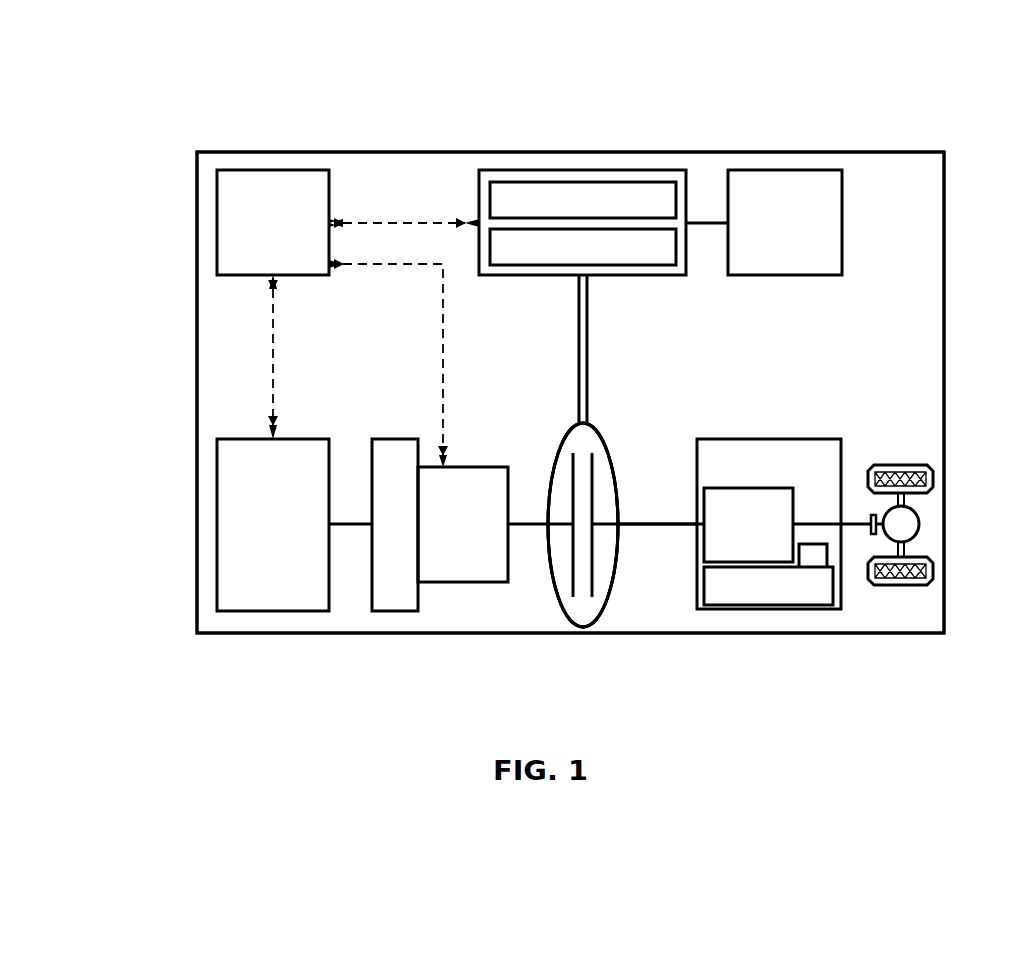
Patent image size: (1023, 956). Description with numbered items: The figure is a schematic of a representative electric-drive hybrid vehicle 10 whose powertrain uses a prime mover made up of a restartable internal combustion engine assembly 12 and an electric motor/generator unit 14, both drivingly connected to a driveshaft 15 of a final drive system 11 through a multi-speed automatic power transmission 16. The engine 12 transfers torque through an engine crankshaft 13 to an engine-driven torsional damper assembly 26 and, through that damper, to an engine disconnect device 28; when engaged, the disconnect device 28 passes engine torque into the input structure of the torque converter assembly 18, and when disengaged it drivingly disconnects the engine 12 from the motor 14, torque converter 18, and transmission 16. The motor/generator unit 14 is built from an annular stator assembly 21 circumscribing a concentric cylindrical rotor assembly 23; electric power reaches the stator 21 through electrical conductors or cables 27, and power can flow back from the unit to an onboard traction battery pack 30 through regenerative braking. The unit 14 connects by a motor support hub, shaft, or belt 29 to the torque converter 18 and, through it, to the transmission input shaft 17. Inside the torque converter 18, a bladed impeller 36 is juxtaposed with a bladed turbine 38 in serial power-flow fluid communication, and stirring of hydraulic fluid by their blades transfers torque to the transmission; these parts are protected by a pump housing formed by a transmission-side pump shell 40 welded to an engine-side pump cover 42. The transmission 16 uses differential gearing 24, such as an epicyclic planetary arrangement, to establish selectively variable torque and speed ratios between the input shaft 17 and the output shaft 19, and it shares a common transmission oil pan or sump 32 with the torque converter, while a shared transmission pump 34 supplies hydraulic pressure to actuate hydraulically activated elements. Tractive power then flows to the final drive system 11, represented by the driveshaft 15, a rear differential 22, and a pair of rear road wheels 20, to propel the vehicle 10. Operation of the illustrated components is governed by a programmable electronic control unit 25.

The hybrid vehicle 10 is at (184, 131).
The final drive system 11 is at (922, 347).
The internal combustion engine assembly 12 is at (230, 437).
The engine crankshaft 13 is at (349, 522).
The electric motor/generator unit 14 is at (497, 168).
The driveshaft 15 is at (862, 522).
The multi-speed automatic power transmission 16 is at (712, 437).
The transmission input shaft 17 is at (652, 520).
The torque converter assembly 18 is at (613, 580).
The transmission output shaft 19 is at (808, 522).
The rear road wheels 20 is at (897, 464).
The stator assembly 21 is at (490, 193).
The rear differential 22 is at (919, 523).
The rotor assembly 23 is at (490, 243).
The differential gearing 24 is at (749, 486).
The electronic control unit 25 is at (228, 168).
The torsional damper assembly 26 is at (418, 437).
The electrical conductors or cables 27 is at (700, 221).
The engine disconnect device 28 is at (480, 465).
The motor support hub, shaft, or belt 29 is at (578, 303).
The traction battery pack 30 is at (757, 168).
The transmission oil pan or sump 32 is at (745, 586).
The transmission pump 34 is at (812, 556).
The impeller 36 is at (572, 593).
The turbine 38 is at (593, 593).
The pump shell 40 is at (617, 556).
The pump cover 42 is at (557, 583).